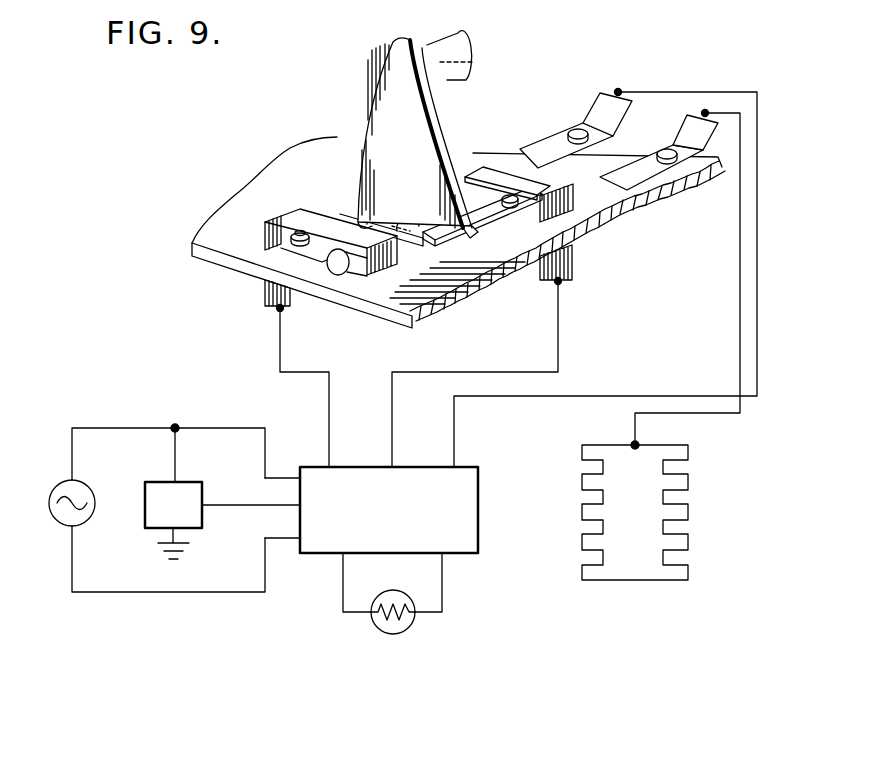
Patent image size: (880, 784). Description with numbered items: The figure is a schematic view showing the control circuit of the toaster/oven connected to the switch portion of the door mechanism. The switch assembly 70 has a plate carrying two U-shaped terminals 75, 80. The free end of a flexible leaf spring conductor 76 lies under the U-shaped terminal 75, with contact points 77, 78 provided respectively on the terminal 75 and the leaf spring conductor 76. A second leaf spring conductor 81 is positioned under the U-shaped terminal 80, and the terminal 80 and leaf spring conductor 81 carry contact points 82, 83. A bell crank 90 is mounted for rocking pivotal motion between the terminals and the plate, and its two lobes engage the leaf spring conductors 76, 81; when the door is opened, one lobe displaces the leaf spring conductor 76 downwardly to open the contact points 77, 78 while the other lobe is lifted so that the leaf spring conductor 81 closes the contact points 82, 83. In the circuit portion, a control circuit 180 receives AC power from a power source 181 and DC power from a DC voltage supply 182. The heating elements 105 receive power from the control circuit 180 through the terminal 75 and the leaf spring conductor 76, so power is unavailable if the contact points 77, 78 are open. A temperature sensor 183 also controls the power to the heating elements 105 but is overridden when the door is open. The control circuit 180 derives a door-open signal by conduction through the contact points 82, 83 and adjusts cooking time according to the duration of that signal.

The switch assembly 70 is at (297, 145).
The U-shaped terminal 75 is at (312, 216).
The flexible leaf spring conductor 76 is at (550, 143).
The contact point 77 is at (300, 230).
The contact point 78 is at (303, 240).
The U-shaped terminal 80 is at (566, 206).
The second leaf spring conductor 81 is at (647, 172).
The contact point 82 is at (573, 200).
The contact point 83 is at (508, 208).
The bell crank 90 is at (372, 75).
The heating elements 105 is at (690, 478).
The control circuit 180 is at (480, 518).
The power source 181 is at (53, 487).
The DC voltage supply 182 is at (145, 531).
The temperature sensor 183 is at (380, 634).